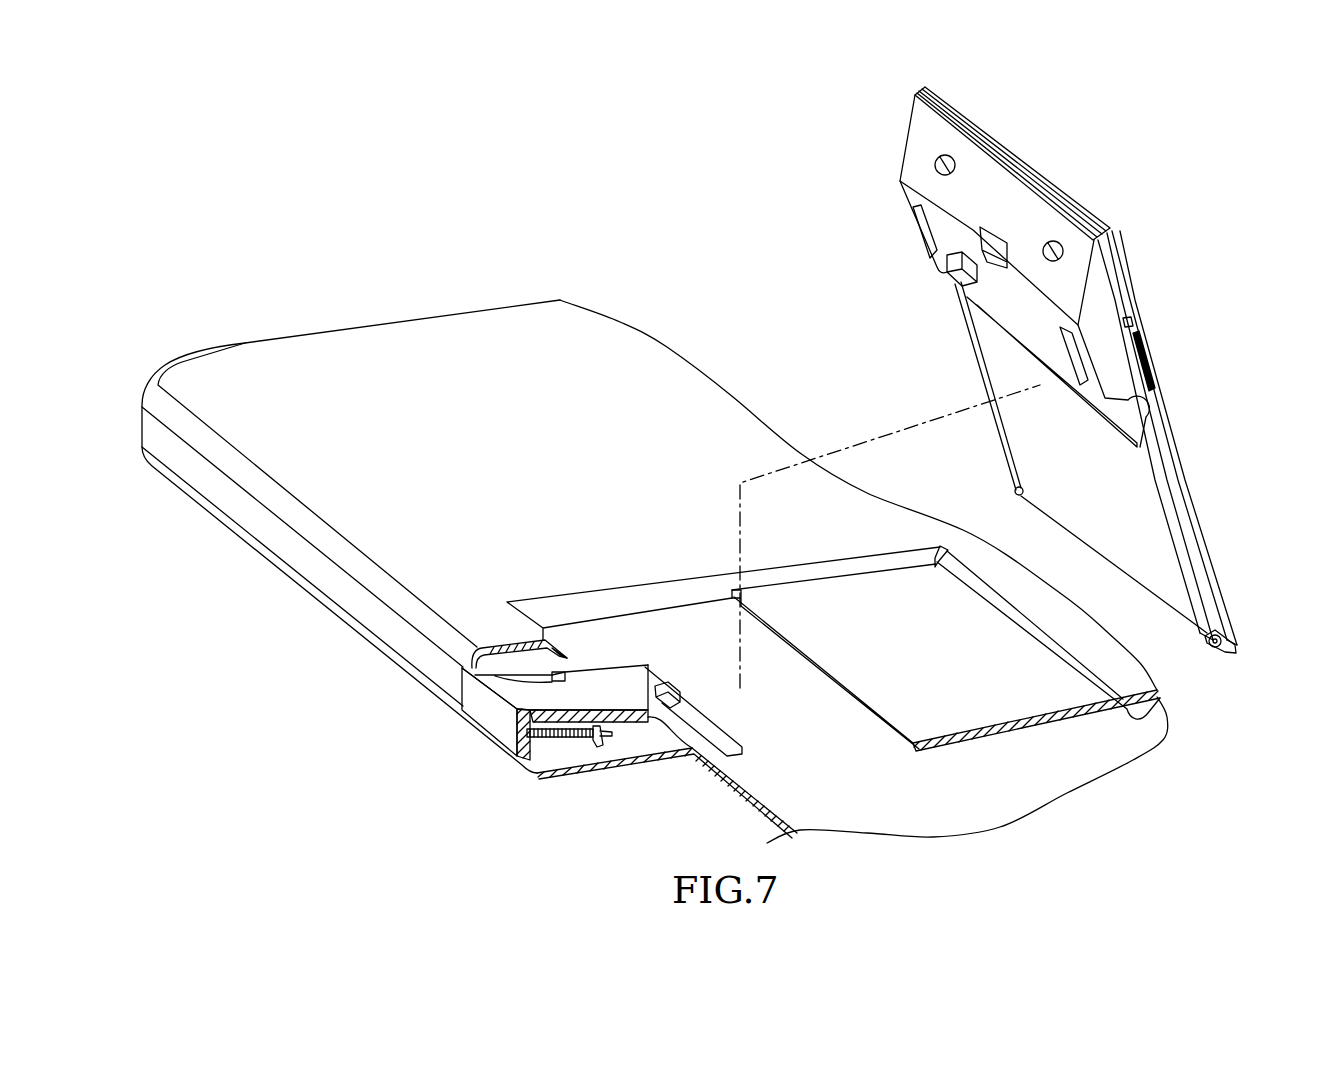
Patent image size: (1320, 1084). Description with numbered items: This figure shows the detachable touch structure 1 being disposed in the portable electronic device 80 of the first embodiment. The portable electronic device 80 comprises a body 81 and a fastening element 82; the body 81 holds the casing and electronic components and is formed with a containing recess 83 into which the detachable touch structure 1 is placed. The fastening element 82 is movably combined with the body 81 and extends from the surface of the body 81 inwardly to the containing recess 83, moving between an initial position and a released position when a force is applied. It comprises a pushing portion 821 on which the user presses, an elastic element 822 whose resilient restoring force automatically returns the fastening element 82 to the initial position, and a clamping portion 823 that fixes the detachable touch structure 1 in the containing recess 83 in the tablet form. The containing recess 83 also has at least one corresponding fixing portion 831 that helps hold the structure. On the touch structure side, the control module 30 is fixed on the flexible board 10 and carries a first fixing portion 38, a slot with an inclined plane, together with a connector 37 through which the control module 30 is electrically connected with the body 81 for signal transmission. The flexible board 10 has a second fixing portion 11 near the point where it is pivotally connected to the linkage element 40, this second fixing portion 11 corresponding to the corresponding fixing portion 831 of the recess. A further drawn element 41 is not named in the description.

The detachable touch structure 1 is at (848, 218).
The flexible board 10 is at (1238, 652).
The second fixing portion 11 is at (1016, 491).
The control module 30 is at (1102, 290).
The connector 37 is at (946, 268).
The first fixing portion 38 is at (996, 250).
The linkage element 40 is at (993, 383).
The hinge strip 41 is at (1147, 428).
The portable electronic device 80 is at (256, 284).
The body 81 is at (405, 352).
The fastening element 82 is at (622, 672).
The pushing portion 821 is at (500, 720).
The elastic element 822 is at (563, 745).
The clamping portion 823 is at (678, 703).
The containing recess 83 is at (677, 618).
The corresponding fixing portion 831 is at (936, 551).